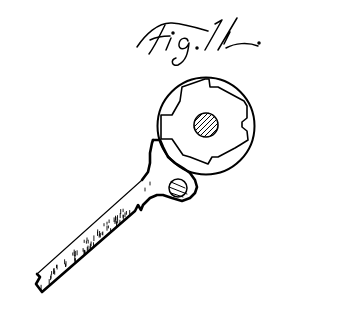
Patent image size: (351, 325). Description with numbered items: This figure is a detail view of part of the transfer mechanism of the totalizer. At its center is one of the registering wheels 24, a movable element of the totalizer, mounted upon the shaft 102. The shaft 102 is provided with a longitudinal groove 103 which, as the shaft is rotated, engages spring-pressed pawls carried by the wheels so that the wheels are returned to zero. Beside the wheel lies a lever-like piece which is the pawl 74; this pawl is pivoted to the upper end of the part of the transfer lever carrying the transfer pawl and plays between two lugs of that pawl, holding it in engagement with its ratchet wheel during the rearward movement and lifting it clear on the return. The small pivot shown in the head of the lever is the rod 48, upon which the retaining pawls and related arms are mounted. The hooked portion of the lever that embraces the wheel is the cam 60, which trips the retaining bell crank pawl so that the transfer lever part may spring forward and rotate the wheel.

The longitudinal groove 103 is at (207, 114).
The shaft 102 is at (281, 177).
The registering wheel 24 is at (306, 131).
The pawl 74 is at (92, 240).
The rod 48 is at (186, 192).
The cam 60 is at (158, 121).